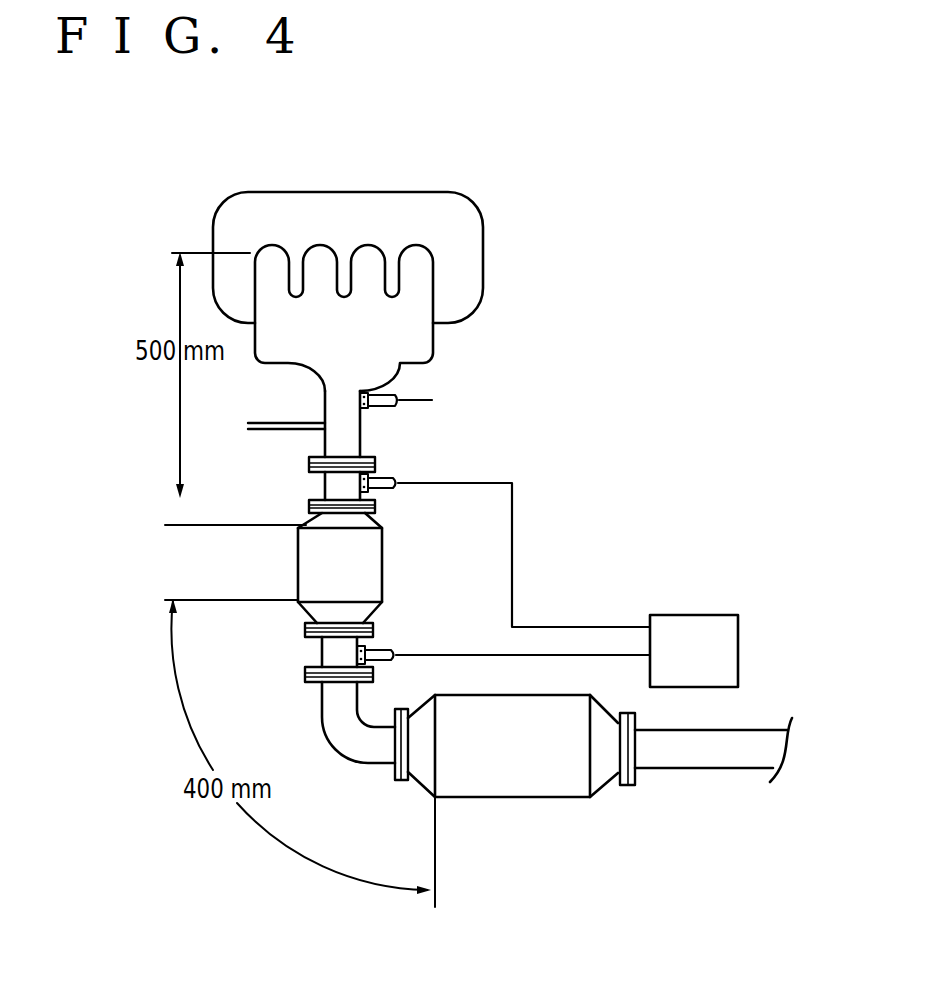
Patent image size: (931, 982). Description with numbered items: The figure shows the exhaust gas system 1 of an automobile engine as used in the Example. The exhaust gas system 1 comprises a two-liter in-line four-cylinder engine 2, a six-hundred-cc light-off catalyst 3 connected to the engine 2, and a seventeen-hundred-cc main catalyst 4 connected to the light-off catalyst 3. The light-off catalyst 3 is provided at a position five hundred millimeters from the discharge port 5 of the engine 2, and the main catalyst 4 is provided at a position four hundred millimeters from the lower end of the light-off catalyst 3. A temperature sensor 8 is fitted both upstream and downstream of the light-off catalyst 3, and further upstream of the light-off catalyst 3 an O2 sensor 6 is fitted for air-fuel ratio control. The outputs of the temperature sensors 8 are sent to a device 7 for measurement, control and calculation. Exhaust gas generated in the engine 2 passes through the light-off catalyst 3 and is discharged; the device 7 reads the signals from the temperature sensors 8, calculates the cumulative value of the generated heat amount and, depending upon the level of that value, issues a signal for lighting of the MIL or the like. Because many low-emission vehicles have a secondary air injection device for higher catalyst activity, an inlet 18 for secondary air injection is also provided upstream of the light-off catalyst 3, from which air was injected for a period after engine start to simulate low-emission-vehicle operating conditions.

The exhaust gas system 1 is at (612, 284).
The engine 2 is at (447, 225).
The light-off catalyst 3 is at (360, 552).
The main catalyst 4 is at (523, 708).
The discharge port 5 is at (327, 246).
The O2 sensor 6 is at (398, 397).
The device for measurement, control and calculation 7 is at (672, 625).
The temperature sensor 8 is at (394, 478).
The inlet for secondary air injection 18 is at (267, 432).